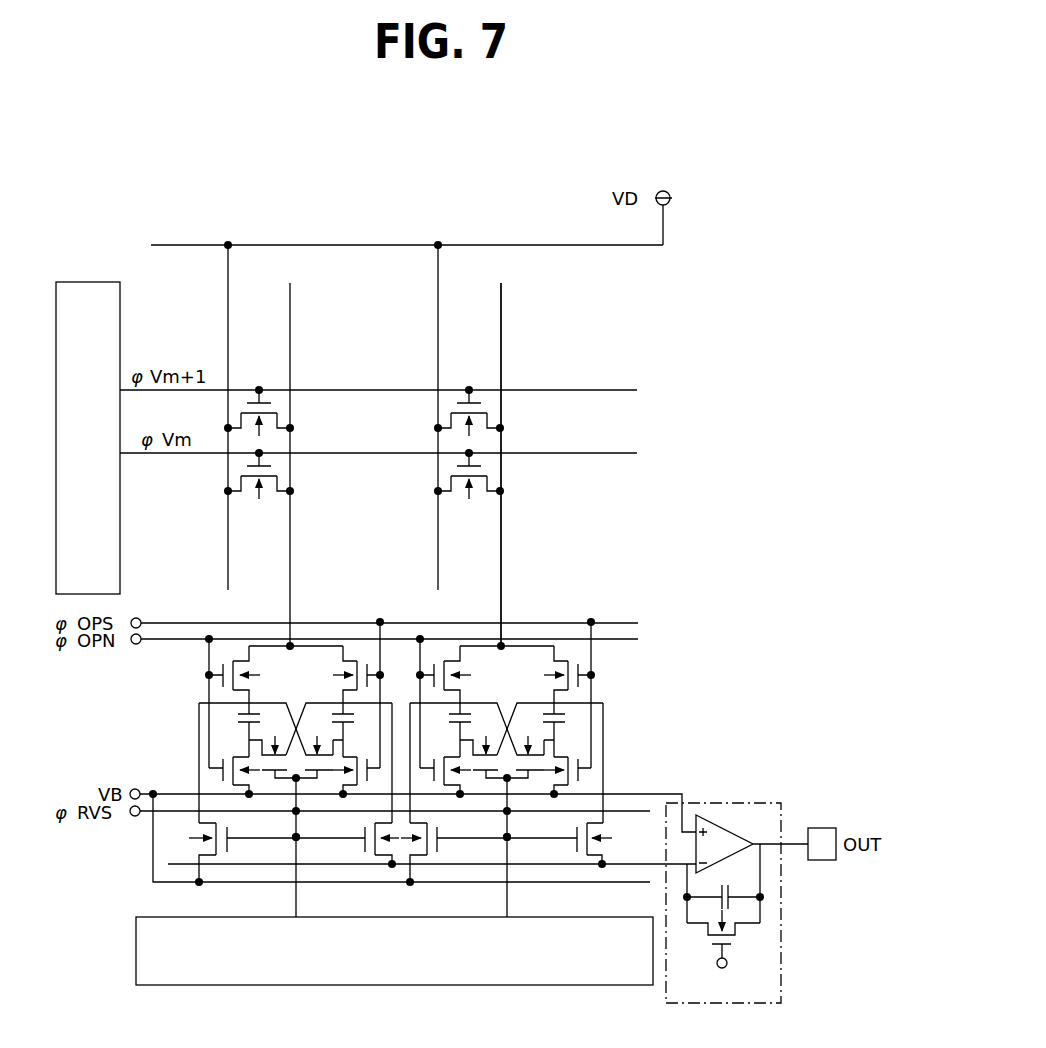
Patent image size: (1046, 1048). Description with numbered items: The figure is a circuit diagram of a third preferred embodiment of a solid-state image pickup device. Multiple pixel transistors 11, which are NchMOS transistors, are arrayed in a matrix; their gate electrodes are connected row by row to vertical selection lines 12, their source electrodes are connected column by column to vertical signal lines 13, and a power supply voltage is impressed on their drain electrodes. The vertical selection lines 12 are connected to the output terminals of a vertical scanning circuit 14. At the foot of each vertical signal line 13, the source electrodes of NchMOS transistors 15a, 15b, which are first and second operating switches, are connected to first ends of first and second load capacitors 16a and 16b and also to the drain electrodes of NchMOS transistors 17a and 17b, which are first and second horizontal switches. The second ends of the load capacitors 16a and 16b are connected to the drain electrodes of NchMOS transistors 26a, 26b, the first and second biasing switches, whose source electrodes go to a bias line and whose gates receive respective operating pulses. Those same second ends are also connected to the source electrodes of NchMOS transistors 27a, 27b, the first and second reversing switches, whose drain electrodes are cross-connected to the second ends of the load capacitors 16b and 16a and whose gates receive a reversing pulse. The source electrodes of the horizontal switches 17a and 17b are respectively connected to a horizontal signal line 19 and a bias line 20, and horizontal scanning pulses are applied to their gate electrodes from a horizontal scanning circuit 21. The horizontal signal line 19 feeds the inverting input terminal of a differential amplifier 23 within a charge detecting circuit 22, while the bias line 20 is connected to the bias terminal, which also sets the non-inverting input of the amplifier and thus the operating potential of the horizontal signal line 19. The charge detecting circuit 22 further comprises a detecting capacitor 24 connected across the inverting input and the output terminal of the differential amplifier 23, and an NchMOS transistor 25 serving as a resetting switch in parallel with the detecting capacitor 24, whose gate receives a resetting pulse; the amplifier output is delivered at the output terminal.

The pixel transistor 11 is at (477, 432).
The vertical selection line 12 is at (553, 388).
The vertical signal line 13 is at (503, 533).
The vertical scanning circuit 14 is at (70, 282).
The first operating switch 15a is at (562, 658).
The second operating switch 15b is at (455, 661).
The first load capacitor 16a is at (570, 717).
The second load capacitor 16b is at (433, 717).
The first horizontal switch 17a is at (603, 838).
The second horizontal switch 17b is at (410, 843).
The horizontal signal line 19 is at (181, 862).
The bias line 20 is at (186, 794).
The horizontal scanning circuit 21 is at (548, 984).
The charge detecting circuit 22 is at (744, 870).
The differential amplifier 23 is at (732, 830).
The detecting capacitor 24 is at (723, 882).
The NchMOS transistor (resetting switch) 25 is at (732, 927).
The first biasing switch 26a is at (563, 748).
The second biasing switch 26b is at (467, 778).
The first reversing switch 27a is at (522, 735).
The second reversing switch 27b is at (487, 745).